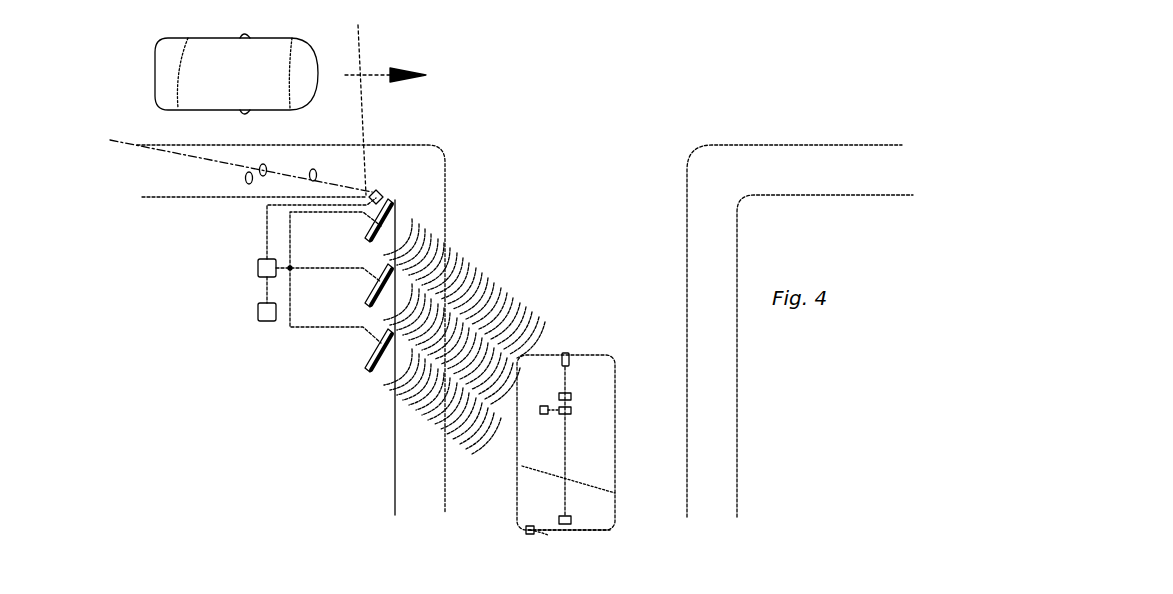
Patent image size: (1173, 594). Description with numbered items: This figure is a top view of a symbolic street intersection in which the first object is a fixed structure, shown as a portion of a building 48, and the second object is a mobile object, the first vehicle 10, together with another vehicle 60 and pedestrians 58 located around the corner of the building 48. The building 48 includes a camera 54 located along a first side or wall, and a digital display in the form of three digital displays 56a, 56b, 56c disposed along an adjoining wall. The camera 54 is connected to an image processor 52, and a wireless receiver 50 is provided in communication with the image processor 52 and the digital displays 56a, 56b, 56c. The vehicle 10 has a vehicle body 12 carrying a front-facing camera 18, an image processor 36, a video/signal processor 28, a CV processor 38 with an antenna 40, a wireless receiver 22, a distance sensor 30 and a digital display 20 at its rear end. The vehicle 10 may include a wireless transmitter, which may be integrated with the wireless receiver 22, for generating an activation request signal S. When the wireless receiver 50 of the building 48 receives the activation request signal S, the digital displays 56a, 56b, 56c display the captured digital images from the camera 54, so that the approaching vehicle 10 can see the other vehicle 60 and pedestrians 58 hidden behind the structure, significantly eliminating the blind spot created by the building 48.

The first vehicle 10 is at (608, 431).
The vehicle body 12 is at (600, 462).
The front-facing camera 18 is at (567, 352).
The digital display 20 is at (594, 535).
The wireless receiver 22 is at (526, 534).
The video/signal processor 28 is at (574, 519).
The distance sensor 30 is at (534, 536).
The image processor 36 is at (574, 396).
The CV processor 38 is at (574, 409).
The antenna 40 is at (545, 416).
The building 48 is at (238, 374).
The wireless receiver 50 is at (257, 312).
The image processor 52 is at (257, 268).
The camera 54 is at (381, 191).
The digital display 56a is at (372, 352).
The digital display 56b is at (372, 297).
The digital display 56c is at (372, 234).
The pedestrians 58 is at (311, 167).
The another vehicle 60 is at (248, 84).
The activation request signal S is at (473, 282).